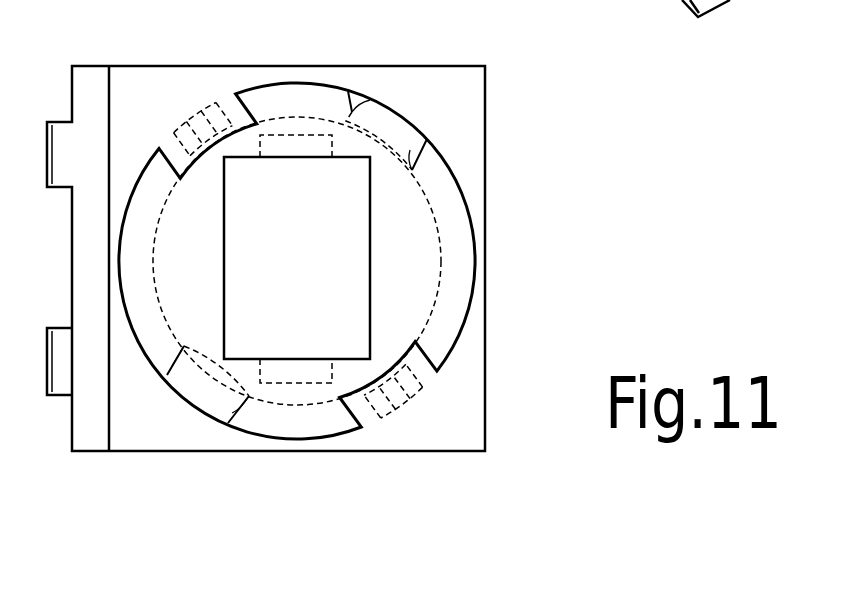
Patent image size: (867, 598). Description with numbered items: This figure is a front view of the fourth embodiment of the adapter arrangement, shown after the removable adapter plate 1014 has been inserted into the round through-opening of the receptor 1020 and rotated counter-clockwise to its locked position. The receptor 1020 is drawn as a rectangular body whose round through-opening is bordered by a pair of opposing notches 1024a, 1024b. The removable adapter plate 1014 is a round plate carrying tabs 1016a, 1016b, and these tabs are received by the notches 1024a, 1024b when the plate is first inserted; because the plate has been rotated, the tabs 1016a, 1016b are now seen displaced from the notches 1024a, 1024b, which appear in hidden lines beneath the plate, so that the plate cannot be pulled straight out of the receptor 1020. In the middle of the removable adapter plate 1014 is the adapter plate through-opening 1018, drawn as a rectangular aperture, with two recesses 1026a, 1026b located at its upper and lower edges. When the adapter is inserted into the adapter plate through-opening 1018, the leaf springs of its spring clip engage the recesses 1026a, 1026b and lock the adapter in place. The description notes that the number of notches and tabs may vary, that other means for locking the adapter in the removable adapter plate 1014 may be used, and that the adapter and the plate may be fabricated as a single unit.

The removable adapter plate 1014 is at (463, 198).
The tab 1016a is at (187, 118).
The tab 1016b is at (410, 402).
The adapter plate through-opening 1018 is at (333, 272).
The receptor 1020 is at (485, 96).
The notch 1024a is at (348, 91).
The notch 1024b is at (248, 425).
The recess 1026a is at (295, 134).
The recess 1026b is at (294, 383).